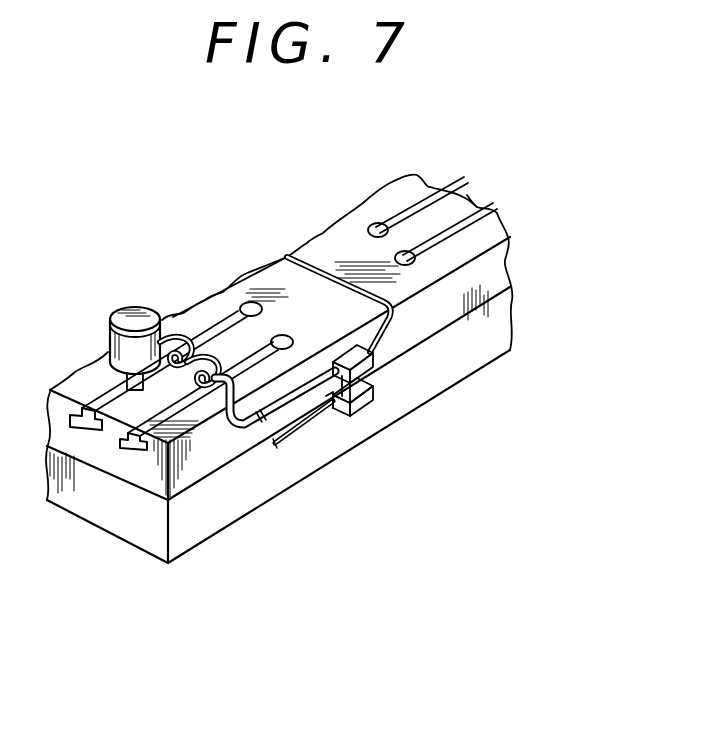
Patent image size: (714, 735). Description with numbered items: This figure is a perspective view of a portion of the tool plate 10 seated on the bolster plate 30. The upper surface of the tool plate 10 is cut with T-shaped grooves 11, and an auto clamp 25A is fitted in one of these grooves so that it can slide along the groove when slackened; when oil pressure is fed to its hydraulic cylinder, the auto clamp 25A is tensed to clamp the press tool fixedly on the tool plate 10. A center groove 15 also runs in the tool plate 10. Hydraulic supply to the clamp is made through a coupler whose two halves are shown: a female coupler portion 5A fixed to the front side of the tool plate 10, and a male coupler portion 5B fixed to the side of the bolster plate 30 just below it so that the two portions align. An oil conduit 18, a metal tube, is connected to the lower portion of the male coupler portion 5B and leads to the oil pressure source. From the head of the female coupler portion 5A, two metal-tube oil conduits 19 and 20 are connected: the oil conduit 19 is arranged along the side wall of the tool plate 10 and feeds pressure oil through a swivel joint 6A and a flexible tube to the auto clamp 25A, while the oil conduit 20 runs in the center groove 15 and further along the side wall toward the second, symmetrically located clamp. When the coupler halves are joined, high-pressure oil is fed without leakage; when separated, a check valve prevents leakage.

The tool plate 10 is at (82, 372).
The T-shaped grooves 11 is at (227, 303).
The center groove 15 is at (323, 268).
The oil conduit 18 is at (302, 393).
The oil conduit 19 is at (331, 393).
The oil conduit 20 is at (297, 257).
The auto clamp 25A is at (134, 302).
The bolster plate 30 is at (148, 527).
The female coupler portion 5A is at (390, 357).
The male coupler portion 5B is at (362, 397).
The swivel joint 6A is at (243, 430).